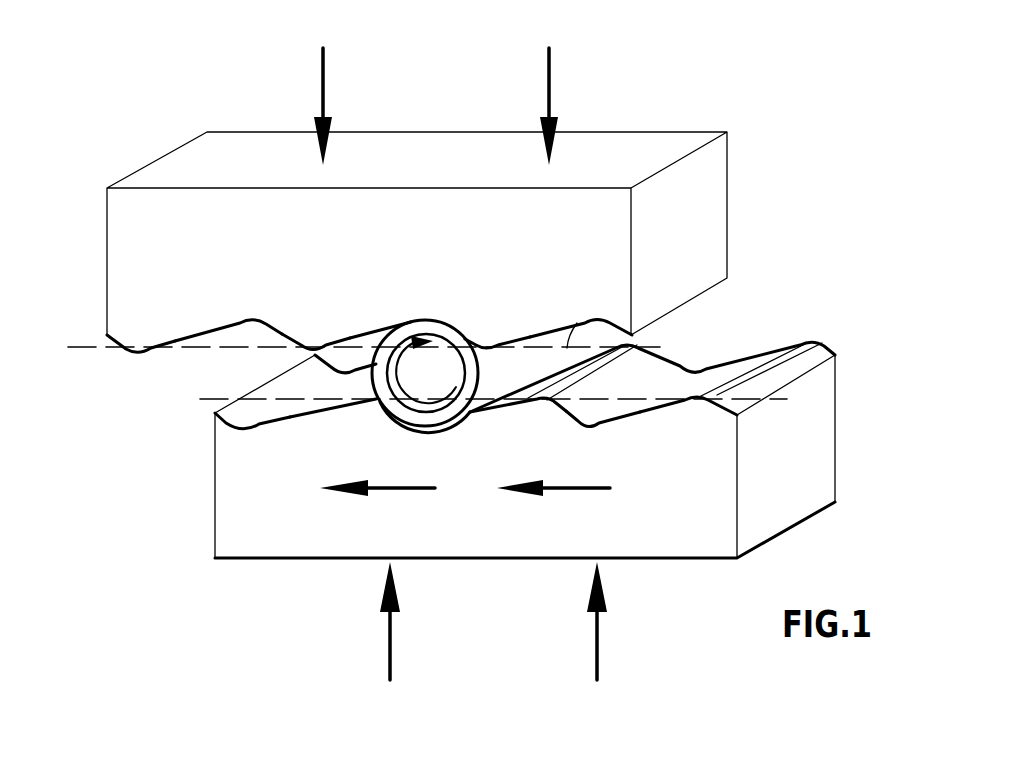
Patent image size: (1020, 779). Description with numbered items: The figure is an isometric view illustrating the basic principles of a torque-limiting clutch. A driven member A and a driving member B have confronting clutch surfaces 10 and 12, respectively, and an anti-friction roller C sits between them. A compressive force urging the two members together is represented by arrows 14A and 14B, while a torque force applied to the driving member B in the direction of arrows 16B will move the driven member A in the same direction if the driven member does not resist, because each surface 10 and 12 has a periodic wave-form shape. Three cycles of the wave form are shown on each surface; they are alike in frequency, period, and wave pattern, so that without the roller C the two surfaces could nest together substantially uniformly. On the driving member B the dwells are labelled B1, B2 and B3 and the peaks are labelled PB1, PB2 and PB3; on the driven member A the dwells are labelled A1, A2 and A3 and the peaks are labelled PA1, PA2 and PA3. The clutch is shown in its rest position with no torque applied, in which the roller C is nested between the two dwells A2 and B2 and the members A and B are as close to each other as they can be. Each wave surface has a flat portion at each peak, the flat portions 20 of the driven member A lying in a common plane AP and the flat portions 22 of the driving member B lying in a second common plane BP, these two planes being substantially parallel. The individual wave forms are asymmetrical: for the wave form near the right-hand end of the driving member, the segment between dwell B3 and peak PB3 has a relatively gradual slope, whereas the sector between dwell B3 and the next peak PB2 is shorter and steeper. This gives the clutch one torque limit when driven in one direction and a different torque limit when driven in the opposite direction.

The driven member A is at (700, 215).
The driving member B is at (785, 462).
The anti-friction roller C is at (425, 373).
The clutch surface 10 is at (178, 350).
The clutch surface 12 is at (655, 368).
The arrow 14A is at (438, 92).
The arrow 14B is at (494, 637).
The arrows 16B is at (410, 494).
The flat portion 20 is at (141, 351).
The flat portion 22 is at (367, 392).
The dwell A1 is at (597, 318).
The dwell A2 is at (424, 320).
The dwell A3 is at (253, 320).
The peak PA1 is at (486, 345).
The peak PA2 is at (312, 345).
The peak PA3 is at (135, 345).
The dwell B1 is at (245, 430).
The dwell B2 is at (422, 428).
The dwell B3 is at (590, 428).
The peak PB1 is at (364, 402).
The peak PB2 is at (532, 410).
The peak PB3 is at (710, 399).
The common plane AP is at (362, 345).
The second common plane BP is at (497, 399).